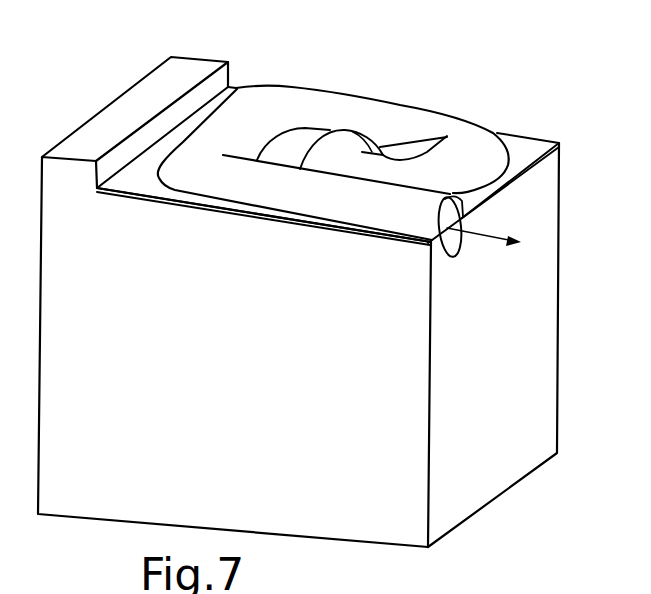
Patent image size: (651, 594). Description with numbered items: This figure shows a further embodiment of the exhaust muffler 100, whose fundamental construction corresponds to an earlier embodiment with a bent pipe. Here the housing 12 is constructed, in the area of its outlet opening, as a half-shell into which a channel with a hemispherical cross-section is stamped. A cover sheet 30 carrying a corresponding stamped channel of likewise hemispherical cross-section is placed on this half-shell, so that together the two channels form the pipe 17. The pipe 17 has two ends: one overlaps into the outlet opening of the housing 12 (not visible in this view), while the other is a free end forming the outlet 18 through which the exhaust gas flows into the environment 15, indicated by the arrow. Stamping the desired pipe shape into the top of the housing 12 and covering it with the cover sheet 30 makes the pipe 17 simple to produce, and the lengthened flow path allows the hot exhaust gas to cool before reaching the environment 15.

The exhaust muffler 100 is at (340, 58).
The housing 12 is at (293, 393).
The environment 15 is at (553, 527).
The bent pipe 17 is at (400, 124).
The outlet 18 is at (453, 257).
The cover sheet 30 is at (229, 98).